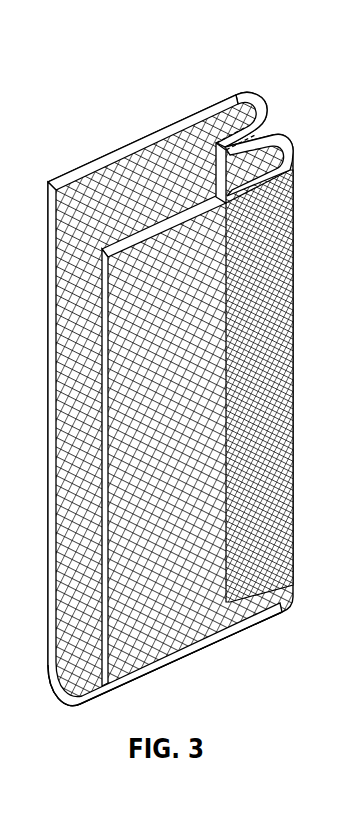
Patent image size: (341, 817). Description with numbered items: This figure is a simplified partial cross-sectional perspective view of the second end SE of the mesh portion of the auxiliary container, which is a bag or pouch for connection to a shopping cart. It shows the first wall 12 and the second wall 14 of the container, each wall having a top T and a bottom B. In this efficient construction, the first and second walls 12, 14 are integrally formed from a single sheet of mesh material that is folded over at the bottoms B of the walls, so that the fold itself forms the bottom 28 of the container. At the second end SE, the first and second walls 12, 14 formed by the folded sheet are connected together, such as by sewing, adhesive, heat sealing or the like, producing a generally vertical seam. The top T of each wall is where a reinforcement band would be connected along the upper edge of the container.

The first wall 12 is at (168, 192).
The second wall 14 is at (282, 300).
The bottom 28 is at (80, 708).
The second end SE is at (268, 135).
The top T is at (104, 172).
The bottom B is at (63, 699).